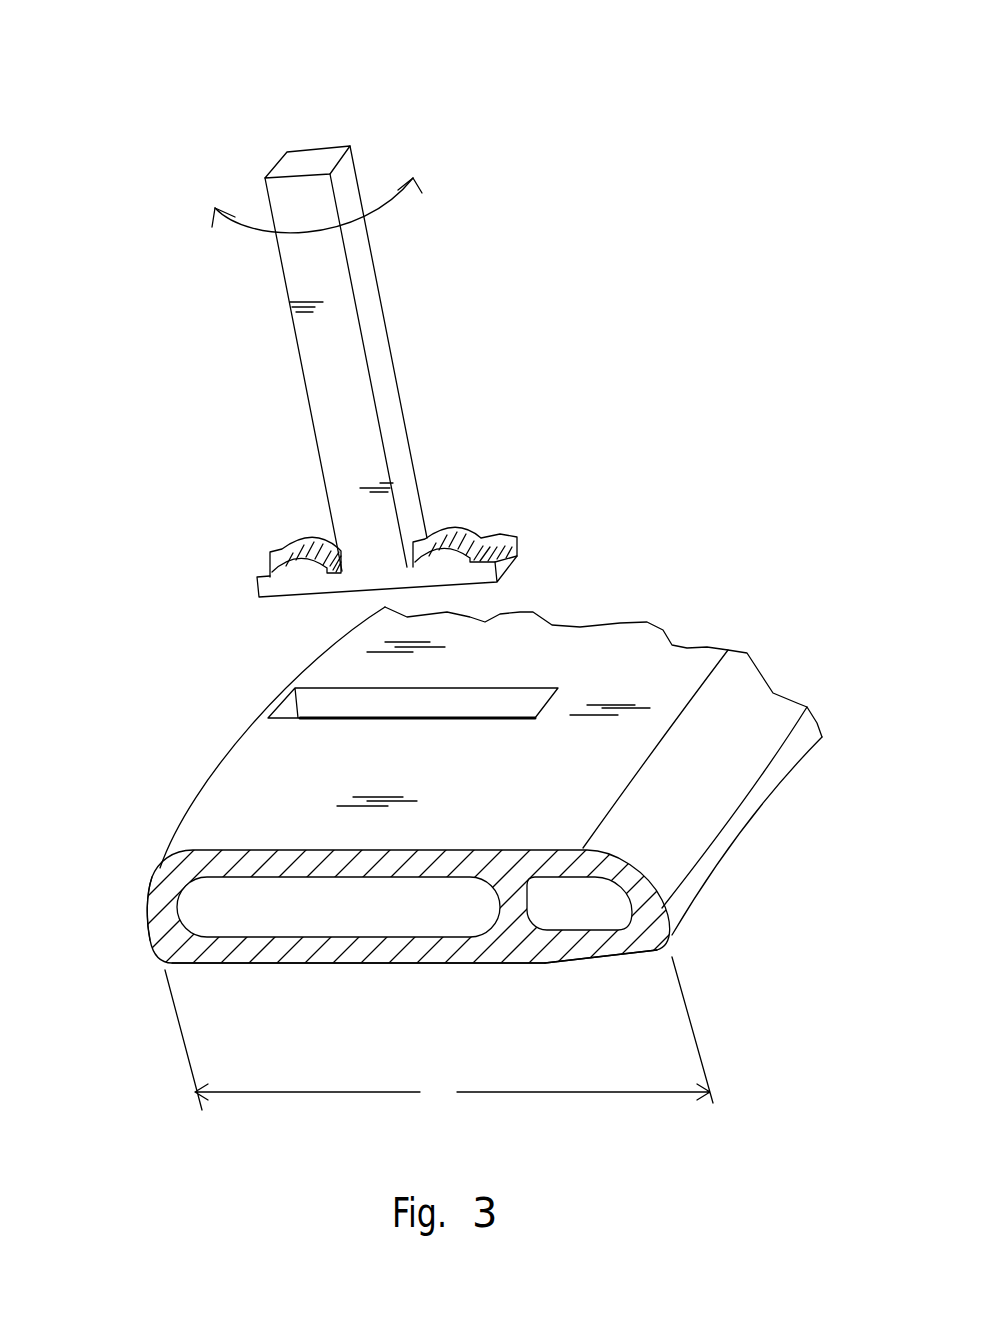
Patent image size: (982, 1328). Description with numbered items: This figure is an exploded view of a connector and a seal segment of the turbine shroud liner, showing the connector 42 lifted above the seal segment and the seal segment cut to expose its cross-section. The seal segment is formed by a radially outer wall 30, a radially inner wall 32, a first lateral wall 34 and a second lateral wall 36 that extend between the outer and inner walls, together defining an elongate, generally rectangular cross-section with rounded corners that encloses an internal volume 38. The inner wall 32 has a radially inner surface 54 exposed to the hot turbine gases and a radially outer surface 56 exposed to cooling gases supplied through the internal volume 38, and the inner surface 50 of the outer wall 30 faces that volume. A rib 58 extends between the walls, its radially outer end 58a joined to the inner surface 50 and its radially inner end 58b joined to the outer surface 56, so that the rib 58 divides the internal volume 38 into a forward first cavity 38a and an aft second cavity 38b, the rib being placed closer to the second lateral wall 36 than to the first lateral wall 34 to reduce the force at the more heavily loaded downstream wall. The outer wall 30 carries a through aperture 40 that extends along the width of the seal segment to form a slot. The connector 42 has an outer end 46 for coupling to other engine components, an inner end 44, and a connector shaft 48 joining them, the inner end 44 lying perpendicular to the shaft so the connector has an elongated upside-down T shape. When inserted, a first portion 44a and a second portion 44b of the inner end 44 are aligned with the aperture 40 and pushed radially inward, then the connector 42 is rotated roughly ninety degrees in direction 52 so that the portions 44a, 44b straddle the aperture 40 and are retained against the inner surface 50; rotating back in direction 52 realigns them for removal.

The radially outer wall 30 is at (235, 855).
The radially inner wall 32 is at (240, 877).
The first lateral wall 34 is at (158, 925).
The second lateral wall 36 is at (638, 873).
The internal volume 38 is at (347, 926).
The first cavity 38a is at (366, 930).
The second cavity 38b is at (580, 920).
The through aperture 40 is at (343, 687).
The connector 42 is at (400, 303).
The inner end 44 is at (417, 542).
The first portion of inner end 44a is at (300, 547).
The second portion of inner end 44b is at (475, 530).
The outer end 46 is at (352, 142).
The connector shaft 48 is at (317, 350).
The inner surface of outer wall 50 is at (297, 877).
The direction of rotation 52 is at (240, 232).
The radially inner surface of inner wall 54 is at (645, 955).
The radially outer surface of inner wall 56 is at (622, 925).
The rib 58 is at (485, 930).
The radially outer end of rib 58a is at (495, 878).
The radially inner end of rib 58b is at (515, 923).